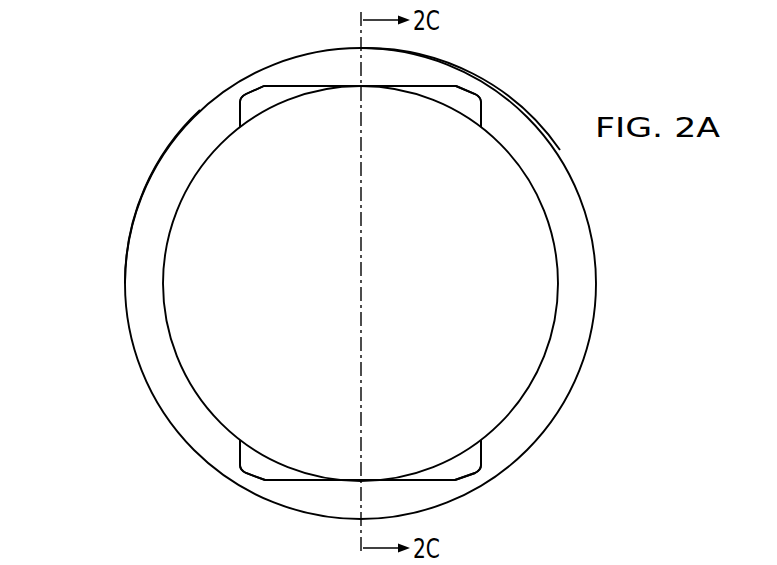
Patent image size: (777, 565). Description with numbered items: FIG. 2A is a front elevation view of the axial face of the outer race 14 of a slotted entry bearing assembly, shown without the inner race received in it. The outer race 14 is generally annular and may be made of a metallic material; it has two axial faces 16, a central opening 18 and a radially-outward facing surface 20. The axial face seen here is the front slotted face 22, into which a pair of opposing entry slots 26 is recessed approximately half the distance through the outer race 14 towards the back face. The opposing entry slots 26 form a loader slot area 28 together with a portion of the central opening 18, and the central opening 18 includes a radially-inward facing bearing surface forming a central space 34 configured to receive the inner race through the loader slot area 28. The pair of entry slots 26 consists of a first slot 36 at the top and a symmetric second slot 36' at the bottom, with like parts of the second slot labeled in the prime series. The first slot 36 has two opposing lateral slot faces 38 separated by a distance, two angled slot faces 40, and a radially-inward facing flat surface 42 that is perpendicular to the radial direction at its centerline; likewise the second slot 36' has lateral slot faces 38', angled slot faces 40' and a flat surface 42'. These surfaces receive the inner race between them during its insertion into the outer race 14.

The outer race 14 is at (112, 83).
The axial faces 16 is at (587, 297).
The central opening 18 is at (532, 224).
The radially-outward facing surface 20 is at (528, 117).
The front slotted face 22 is at (142, 275).
The pair of opposing entry slots 26 is at (337, 79).
The loader slot area 28 is at (407, 108).
The central space 34 is at (214, 377).
The first slot 36 is at (359, 67).
The second slot 36' is at (370, 489).
The lateral slot faces 38 is at (359, 141).
The lateral slot faces 38' is at (363, 422).
The angled slot faces 40 is at (332, 71).
The angled slot faces 40' is at (368, 487).
The radially-inward facing flat surface 42 is at (360, 118).
The radially-inward facing flat surface 42' is at (360, 446).